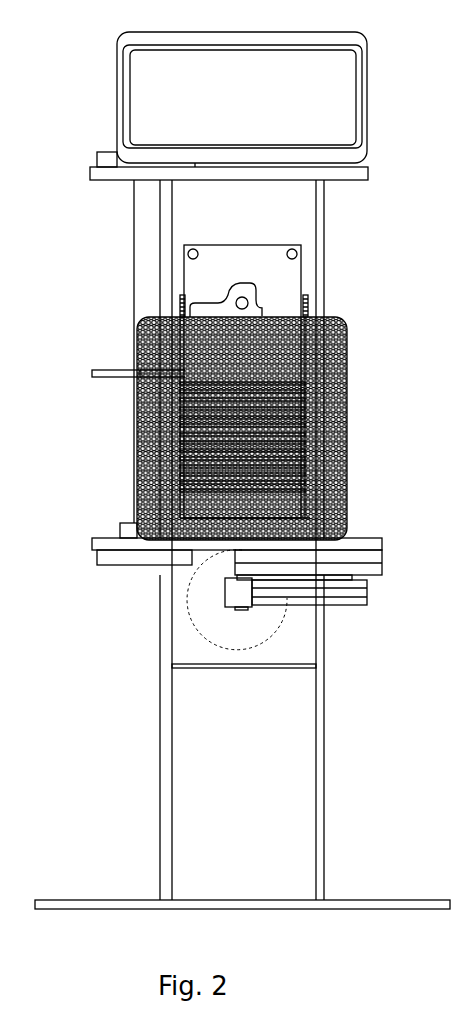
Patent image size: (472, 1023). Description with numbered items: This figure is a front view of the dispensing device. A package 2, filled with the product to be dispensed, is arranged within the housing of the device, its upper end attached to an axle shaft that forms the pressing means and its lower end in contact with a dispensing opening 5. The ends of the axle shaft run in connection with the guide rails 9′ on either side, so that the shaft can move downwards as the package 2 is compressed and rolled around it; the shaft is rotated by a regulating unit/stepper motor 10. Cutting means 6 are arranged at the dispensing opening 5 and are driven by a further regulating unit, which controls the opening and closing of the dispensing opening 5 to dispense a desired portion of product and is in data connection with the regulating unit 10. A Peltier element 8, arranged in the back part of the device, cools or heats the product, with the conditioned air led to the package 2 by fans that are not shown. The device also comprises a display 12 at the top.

The display 12 is at (320, 103).
The guide rail 9′ is at (168, 215).
The regulating unit/stepper motor 10 is at (207, 278).
The package 2 is at (326, 343).
The Peltier element 8 is at (262, 445).
The dispensing opening 5 is at (245, 622).
The cutting means 6 is at (280, 592).